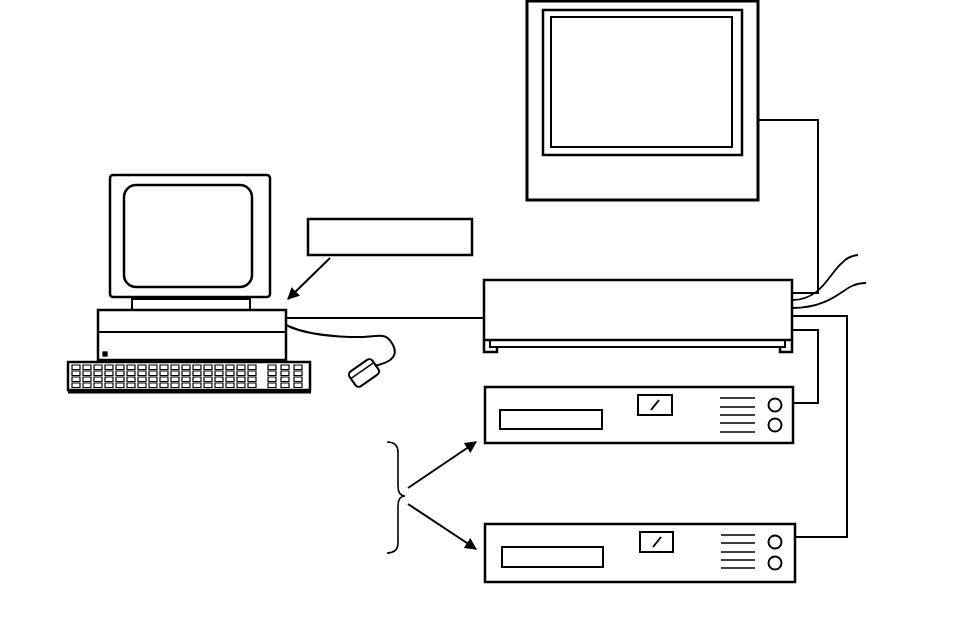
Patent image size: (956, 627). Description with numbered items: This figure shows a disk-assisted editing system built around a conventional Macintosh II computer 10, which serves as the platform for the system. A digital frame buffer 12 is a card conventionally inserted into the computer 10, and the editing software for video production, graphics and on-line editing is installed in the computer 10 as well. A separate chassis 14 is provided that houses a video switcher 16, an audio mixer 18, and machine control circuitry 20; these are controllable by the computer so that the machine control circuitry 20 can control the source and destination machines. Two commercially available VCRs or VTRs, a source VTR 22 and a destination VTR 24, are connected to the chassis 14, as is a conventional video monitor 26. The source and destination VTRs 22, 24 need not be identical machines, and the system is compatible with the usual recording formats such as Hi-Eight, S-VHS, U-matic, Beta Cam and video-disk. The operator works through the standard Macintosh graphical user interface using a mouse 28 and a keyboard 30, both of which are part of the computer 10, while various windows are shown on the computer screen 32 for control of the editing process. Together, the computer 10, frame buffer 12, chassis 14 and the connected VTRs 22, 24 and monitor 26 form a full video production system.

The Macintosh II computer 10 is at (116, 442).
The digital frame buffer 12 is at (415, 218).
The chassis 14 is at (607, 280).
The video switcher 16 is at (838, 271).
The audio mixer 18 is at (841, 290).
The machine control circuitry 20 is at (848, 318).
The source VTR 22 is at (533, 446).
The destination VTR 24 is at (728, 523).
The video monitor 26 is at (527, 88).
The mouse 28 is at (375, 386).
The keyboard 30 is at (88, 360).
The computer screen 32 is at (195, 175).